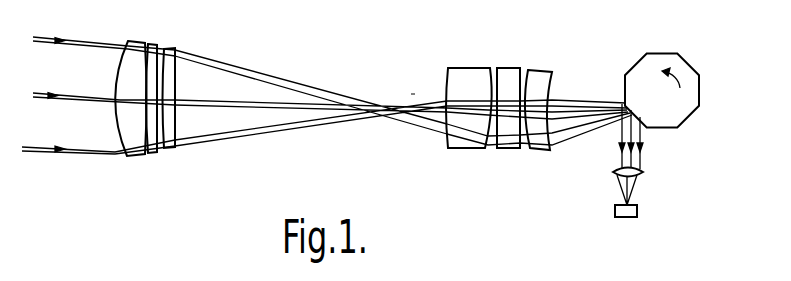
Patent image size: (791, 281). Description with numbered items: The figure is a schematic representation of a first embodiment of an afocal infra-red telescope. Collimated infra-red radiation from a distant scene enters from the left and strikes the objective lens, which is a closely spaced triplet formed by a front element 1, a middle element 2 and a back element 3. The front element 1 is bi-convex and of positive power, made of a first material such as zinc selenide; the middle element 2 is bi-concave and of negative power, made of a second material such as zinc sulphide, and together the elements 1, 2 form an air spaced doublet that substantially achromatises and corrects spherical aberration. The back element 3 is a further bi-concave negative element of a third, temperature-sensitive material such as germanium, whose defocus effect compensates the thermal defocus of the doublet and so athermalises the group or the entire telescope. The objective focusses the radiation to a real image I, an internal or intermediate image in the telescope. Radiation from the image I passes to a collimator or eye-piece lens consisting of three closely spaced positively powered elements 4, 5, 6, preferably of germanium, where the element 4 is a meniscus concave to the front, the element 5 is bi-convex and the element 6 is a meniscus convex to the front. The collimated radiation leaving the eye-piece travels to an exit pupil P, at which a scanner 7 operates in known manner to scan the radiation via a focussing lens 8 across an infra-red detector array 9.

The front lens element 1 is at (134, 157).
The middle lens element 2 is at (152, 153).
The back lens element 3 is at (168, 149).
The eye-piece lens element 4 is at (463, 150).
The eye-piece lens element 5 is at (512, 150).
The eye-piece lens element 6 is at (543, 151).
The scanner 7 is at (650, 52).
The focussing lens 8 is at (643, 172).
The infra-red detector array 9 is at (637, 210).
The real image I is at (411, 92).
The exit pupil P is at (611, 84).